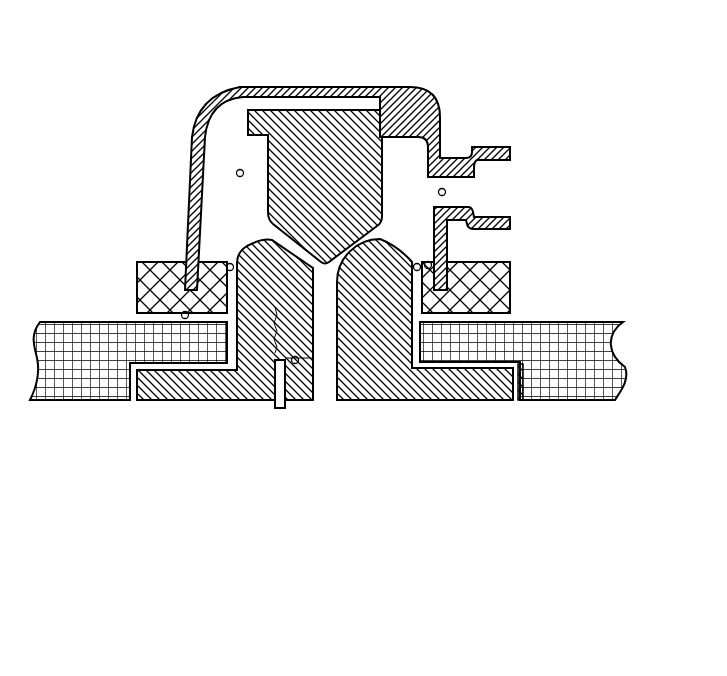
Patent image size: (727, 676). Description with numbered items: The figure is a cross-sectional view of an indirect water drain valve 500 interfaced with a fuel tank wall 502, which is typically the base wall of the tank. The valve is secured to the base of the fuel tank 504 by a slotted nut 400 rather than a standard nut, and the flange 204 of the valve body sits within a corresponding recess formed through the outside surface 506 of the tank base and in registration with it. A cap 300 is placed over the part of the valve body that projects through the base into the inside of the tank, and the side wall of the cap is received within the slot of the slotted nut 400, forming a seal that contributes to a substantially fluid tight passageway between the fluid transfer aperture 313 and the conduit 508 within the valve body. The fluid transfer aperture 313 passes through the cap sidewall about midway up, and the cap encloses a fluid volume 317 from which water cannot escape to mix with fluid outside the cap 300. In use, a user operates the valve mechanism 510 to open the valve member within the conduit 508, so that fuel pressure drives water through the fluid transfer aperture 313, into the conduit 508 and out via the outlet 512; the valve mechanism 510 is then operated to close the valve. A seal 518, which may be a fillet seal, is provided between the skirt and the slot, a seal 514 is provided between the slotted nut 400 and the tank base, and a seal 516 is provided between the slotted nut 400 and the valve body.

The flange 204 is at (357, 344).
The cap 300 is at (336, 167).
The fluid transfer aperture 313 is at (446, 193).
The fluid volume 317 is at (237, 172).
The slotted nut 400 is at (549, 317).
The indirect water drain valve 500 is at (594, 87).
The fuel tank wall 502 is at (596, 317).
The base of the fuel tank 504 is at (523, 398).
The outside surface 506 is at (74, 404).
The conduit 508 is at (350, 398).
The valve mechanism 510 is at (280, 409).
The outlet 512 is at (318, 402).
The seal 514 is at (181, 315).
The seal 516 is at (228, 264).
The seal 518 is at (432, 265).